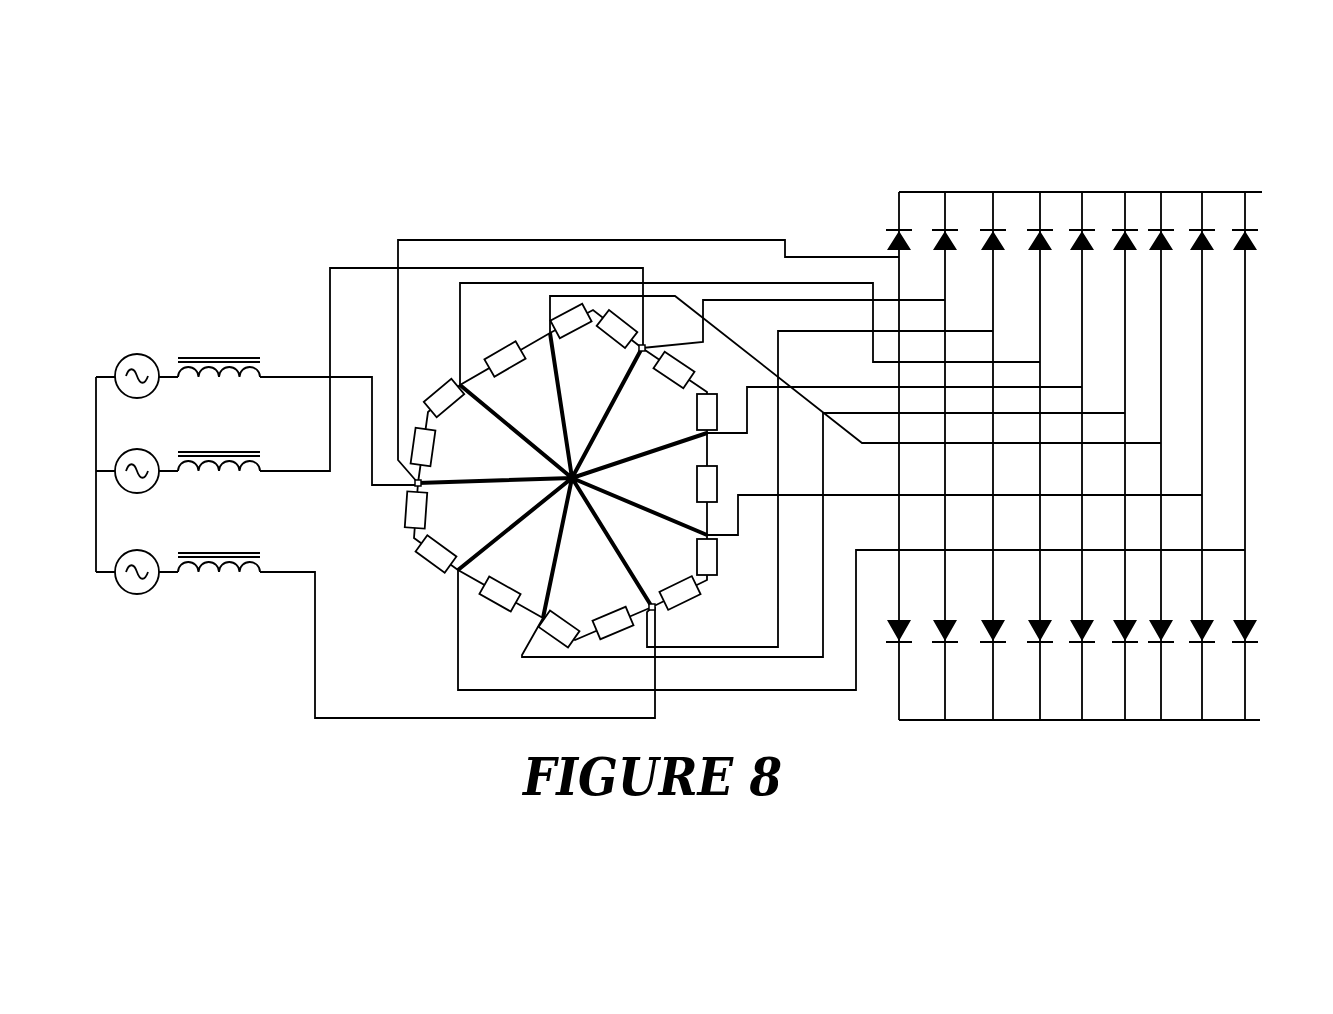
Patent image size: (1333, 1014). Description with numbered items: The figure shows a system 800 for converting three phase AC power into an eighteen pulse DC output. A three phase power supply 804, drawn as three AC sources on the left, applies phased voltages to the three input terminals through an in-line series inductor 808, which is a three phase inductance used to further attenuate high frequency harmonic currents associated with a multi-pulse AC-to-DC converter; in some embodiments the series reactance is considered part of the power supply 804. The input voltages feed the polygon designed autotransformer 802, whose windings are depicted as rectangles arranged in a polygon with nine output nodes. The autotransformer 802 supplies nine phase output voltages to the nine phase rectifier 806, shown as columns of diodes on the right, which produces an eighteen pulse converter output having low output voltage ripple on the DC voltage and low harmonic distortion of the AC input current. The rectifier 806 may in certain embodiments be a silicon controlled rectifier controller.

The system 800 is at (1297, 68).
The polygon designed autotransformer 802 is at (565, 227).
The three phase power supply 804 is at (140, 343).
The nine phase rectifier 806 is at (1095, 185).
The in-line series inductor L1 808 is at (233, 323).